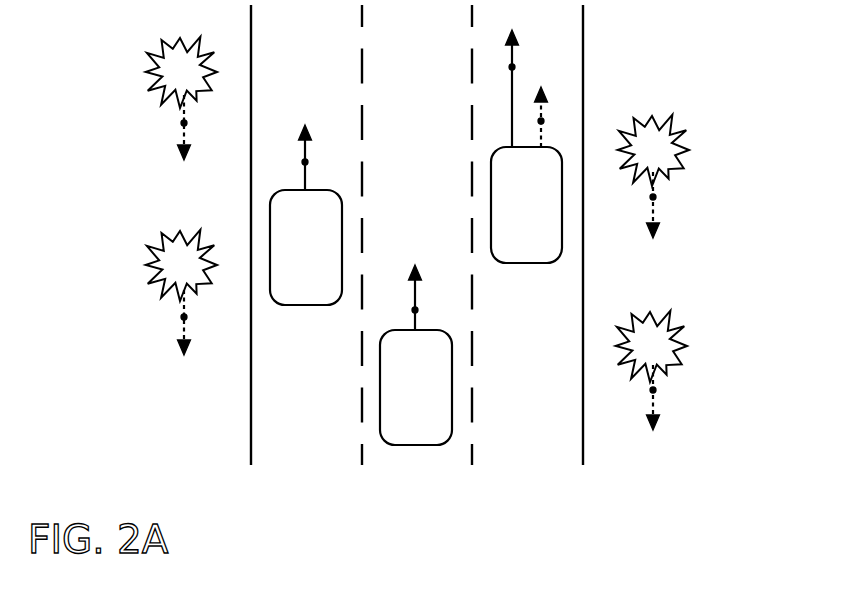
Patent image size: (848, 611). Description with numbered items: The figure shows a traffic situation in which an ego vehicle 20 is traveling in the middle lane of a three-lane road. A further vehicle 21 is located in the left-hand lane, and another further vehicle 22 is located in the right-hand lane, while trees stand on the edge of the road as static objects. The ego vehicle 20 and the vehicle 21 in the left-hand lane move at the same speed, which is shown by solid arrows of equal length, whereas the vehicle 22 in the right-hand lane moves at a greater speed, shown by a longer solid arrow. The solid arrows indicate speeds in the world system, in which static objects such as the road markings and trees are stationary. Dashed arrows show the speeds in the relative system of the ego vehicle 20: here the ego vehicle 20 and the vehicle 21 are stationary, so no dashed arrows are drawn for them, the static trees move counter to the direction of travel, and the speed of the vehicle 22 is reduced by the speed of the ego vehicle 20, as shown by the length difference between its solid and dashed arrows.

The ego vehicle 20 is at (416, 387).
The further vehicle 21 is at (306, 247).
The further vehicle 22 is at (526, 205).